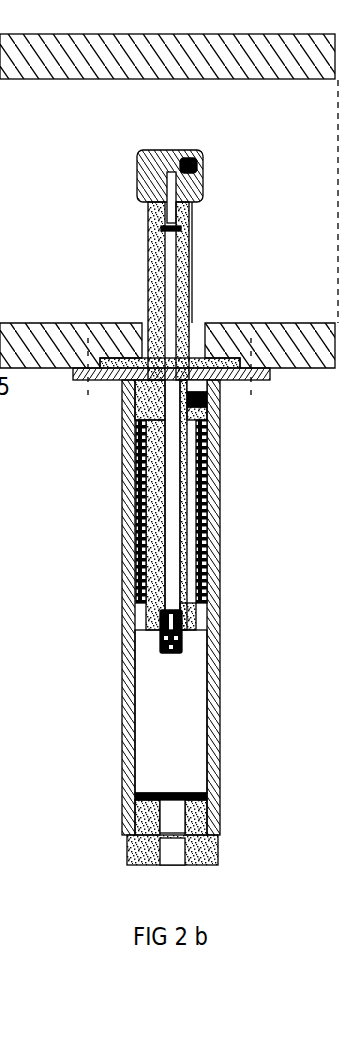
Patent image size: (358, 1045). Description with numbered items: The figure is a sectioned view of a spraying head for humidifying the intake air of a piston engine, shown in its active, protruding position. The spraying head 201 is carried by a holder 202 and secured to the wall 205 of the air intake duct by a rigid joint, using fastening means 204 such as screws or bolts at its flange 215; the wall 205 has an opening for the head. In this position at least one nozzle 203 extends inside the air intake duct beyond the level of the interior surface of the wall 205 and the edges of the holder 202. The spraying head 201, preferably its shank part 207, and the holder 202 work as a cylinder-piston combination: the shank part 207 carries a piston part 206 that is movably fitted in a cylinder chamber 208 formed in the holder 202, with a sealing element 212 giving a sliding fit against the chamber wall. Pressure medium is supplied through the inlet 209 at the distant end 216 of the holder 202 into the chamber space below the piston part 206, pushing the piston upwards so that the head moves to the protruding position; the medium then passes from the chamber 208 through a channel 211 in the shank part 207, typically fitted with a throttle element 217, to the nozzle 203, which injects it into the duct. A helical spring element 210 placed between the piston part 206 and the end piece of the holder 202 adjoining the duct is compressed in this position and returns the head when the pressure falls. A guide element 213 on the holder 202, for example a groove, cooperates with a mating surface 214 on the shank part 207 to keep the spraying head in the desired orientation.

The spraying head 201 is at (137, 181).
The holder 202 is at (123, 572).
The nozzle 203 is at (198, 170).
The fastening means 204 is at (86, 380).
The air intake duct wall 205 is at (33, 320).
The piston part 206 is at (216, 613).
The shank part 207 is at (190, 286).
The cylinder chamber 208 is at (183, 738).
The inlet 209 is at (174, 858).
The spring element 210 is at (124, 487).
The channel 211 is at (151, 305).
The sealing element 212 is at (124, 613).
The guide element 213 is at (218, 409).
The mating surface 214 is at (193, 313).
The flange 215 is at (270, 380).
The distant end of the holder 216 is at (128, 857).
The throttle element 217 is at (160, 648).